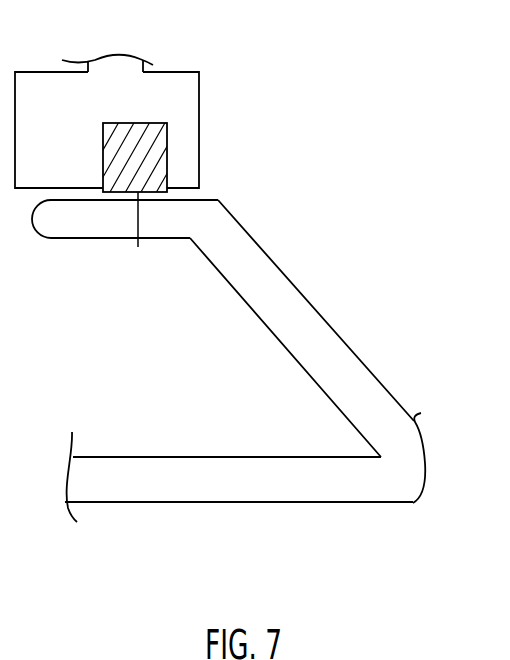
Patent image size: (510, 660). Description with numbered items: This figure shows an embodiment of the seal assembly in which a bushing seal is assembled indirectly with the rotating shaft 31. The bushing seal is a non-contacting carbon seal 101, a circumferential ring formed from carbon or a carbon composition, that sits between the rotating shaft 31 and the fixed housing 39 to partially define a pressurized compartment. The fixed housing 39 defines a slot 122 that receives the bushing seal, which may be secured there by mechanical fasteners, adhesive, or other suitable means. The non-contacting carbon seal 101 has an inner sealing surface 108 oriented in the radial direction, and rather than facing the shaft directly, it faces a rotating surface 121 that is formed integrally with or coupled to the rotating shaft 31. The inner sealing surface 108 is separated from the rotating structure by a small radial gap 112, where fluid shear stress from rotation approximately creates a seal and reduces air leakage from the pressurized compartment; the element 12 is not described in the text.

The fixed housing 39 is at (182, 78).
The slot 122 is at (76, 137).
The non-contacting carbon seal 101 is at (158, 136).
The radial gap 112 is at (209, 191).
The inner sealing surface 108 is at (138, 247).
The rotating surface 121 is at (233, 291).
The rotating shaft 31 is at (175, 461).
The base 12 is at (317, 503).